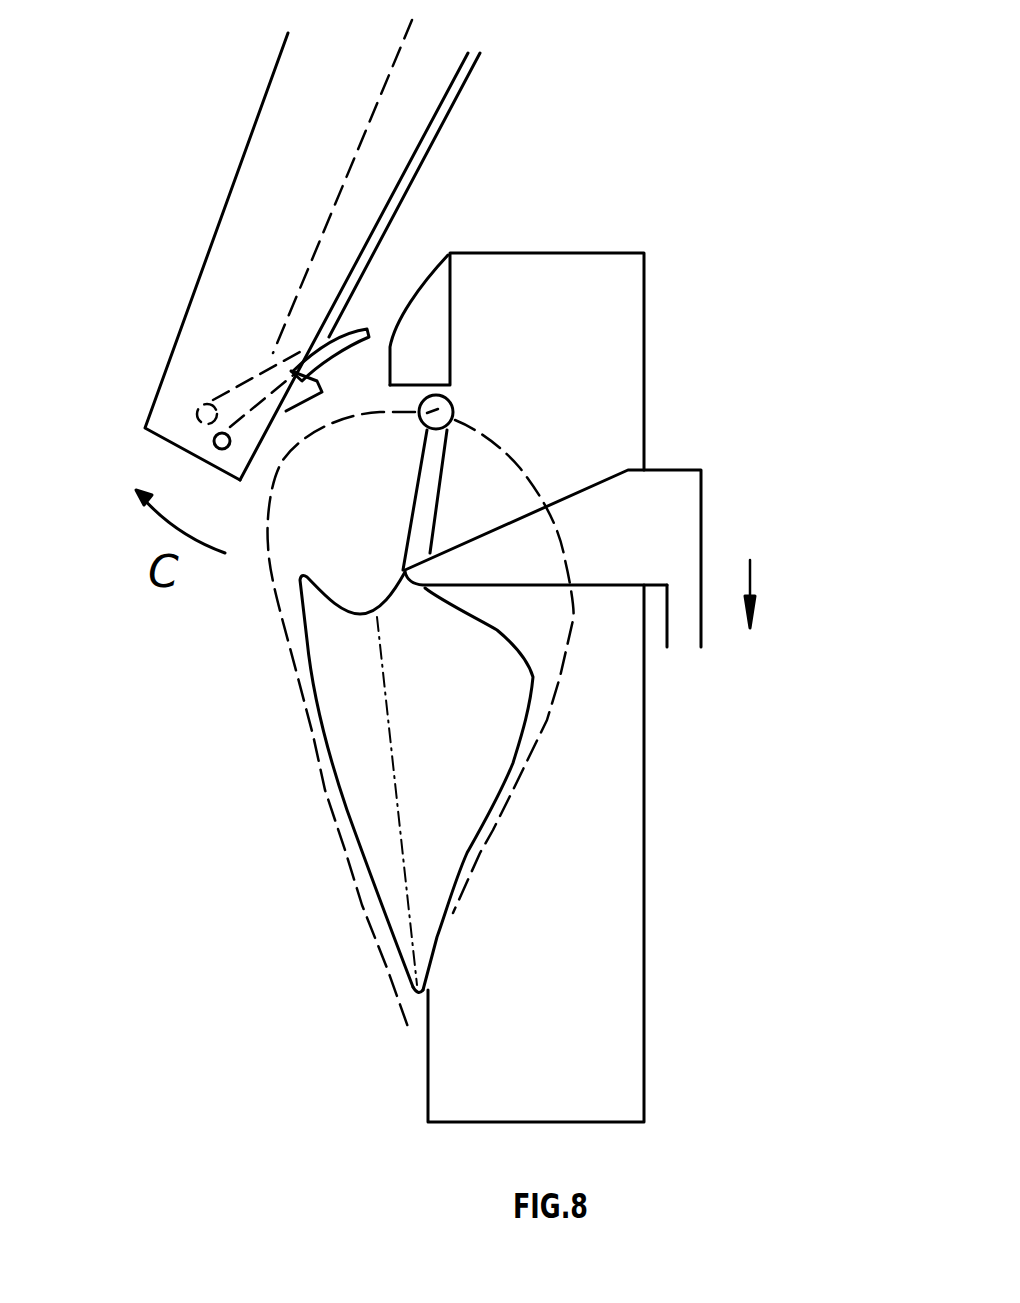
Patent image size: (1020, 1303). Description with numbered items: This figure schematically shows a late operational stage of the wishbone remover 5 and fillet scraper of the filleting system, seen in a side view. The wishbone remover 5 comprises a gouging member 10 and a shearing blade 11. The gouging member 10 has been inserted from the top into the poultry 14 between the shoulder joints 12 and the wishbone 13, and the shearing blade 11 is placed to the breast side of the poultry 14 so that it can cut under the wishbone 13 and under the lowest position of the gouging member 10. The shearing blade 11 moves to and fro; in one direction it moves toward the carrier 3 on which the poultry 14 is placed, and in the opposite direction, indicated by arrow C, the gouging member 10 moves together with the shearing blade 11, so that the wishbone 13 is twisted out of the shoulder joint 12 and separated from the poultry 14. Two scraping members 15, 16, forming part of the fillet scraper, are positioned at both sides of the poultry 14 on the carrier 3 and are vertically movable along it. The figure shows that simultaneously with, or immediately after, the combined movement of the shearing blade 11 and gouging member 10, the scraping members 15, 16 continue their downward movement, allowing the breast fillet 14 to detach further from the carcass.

The carrier 3 is at (620, 990).
The wishbone remover 5 is at (390, 200).
The gouging member 10 is at (222, 441).
The shearing blade 11 is at (260, 218).
The shoulder joint 12 is at (457, 405).
The wishbone 13 is at (217, 408).
The poultry 14 is at (337, 662).
The scraping member 15 is at (646, 558).
The scraping member 16 is at (668, 500).